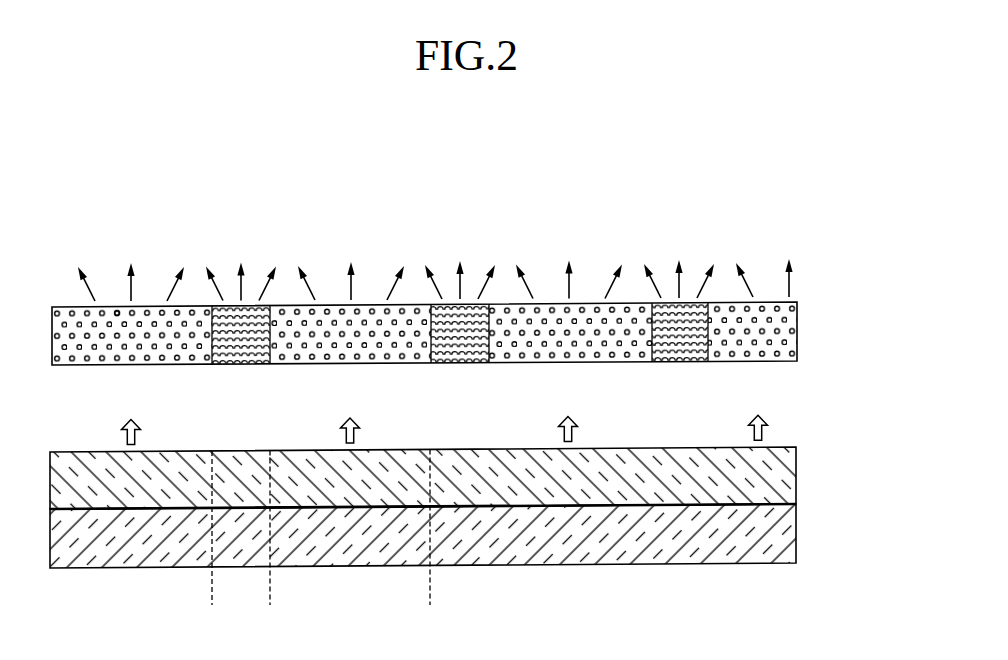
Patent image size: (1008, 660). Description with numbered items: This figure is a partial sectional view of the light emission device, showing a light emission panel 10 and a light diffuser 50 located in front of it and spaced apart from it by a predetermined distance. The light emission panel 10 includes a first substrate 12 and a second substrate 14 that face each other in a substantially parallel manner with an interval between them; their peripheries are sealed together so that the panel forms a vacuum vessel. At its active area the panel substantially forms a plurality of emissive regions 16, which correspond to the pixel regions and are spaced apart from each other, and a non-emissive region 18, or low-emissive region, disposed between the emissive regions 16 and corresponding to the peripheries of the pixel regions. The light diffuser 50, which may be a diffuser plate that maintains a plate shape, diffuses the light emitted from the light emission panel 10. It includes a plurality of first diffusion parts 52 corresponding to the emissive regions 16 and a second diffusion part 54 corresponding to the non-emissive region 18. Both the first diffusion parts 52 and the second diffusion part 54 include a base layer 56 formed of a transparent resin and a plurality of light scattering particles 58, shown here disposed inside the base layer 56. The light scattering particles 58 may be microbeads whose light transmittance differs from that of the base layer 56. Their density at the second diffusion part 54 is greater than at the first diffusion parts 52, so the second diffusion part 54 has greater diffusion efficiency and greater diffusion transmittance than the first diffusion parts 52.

The light emission panel 10 is at (469, 538).
The first substrate 12 is at (777, 530).
The second substrate 14 is at (777, 472).
The emissive regions 16 is at (430, 593).
The non-emissive region 18 is at (270, 593).
The light diffuser 50 is at (459, 316).
The first diffusion parts 52 is at (431, 363).
The second diffusion part 54 is at (270, 364).
The base layer 56 is at (152, 312).
The light scattering particles 58 is at (116, 310).